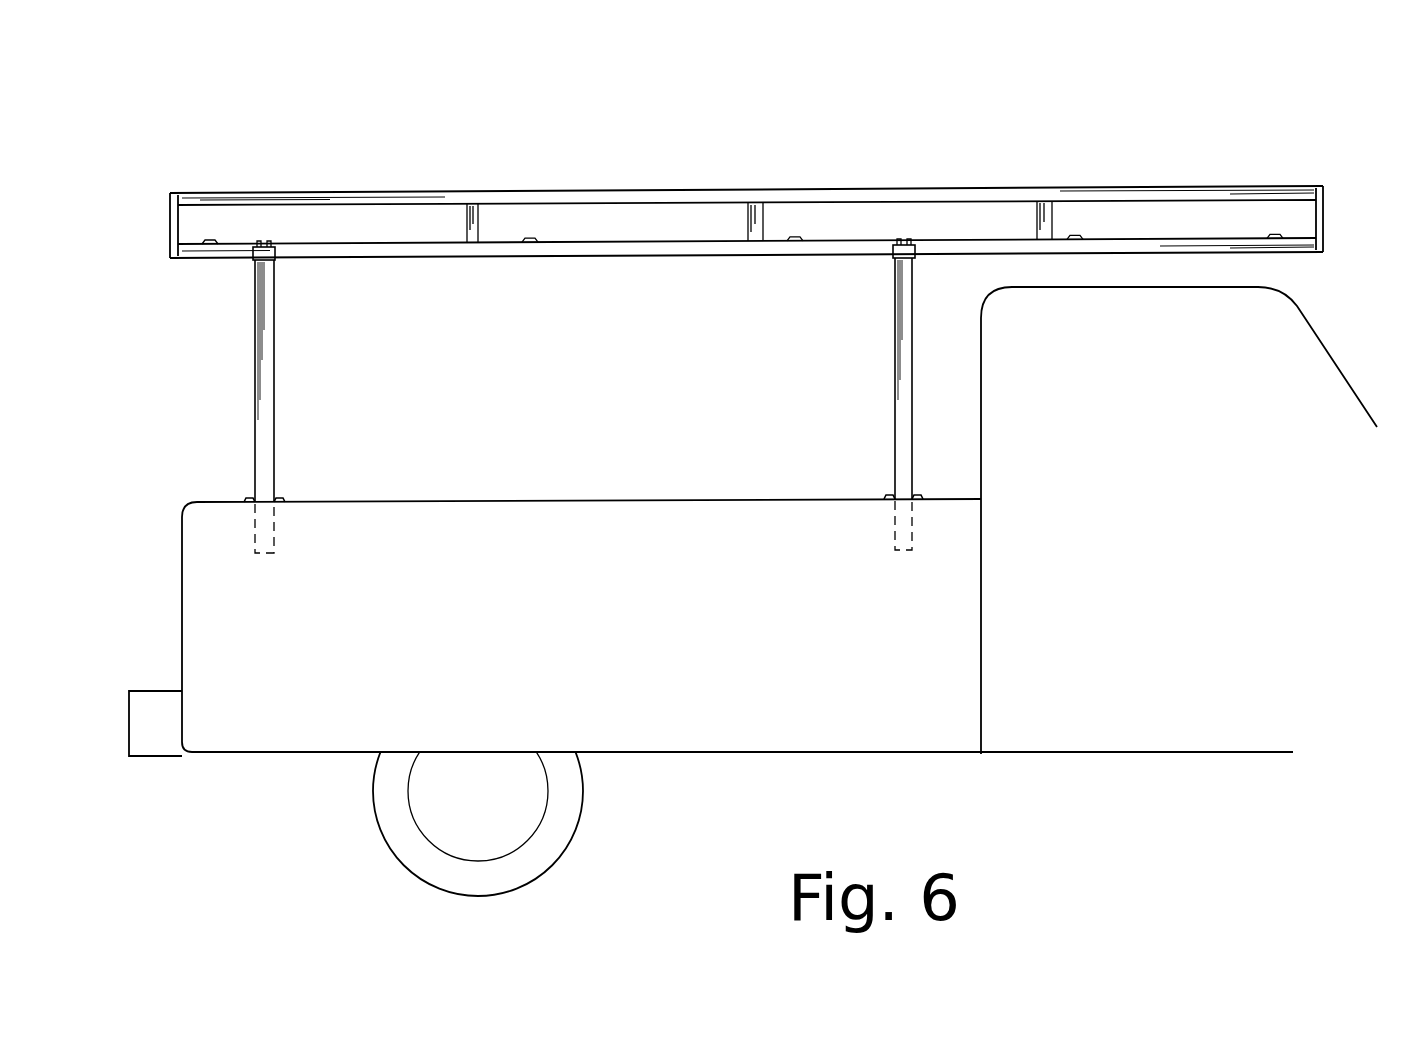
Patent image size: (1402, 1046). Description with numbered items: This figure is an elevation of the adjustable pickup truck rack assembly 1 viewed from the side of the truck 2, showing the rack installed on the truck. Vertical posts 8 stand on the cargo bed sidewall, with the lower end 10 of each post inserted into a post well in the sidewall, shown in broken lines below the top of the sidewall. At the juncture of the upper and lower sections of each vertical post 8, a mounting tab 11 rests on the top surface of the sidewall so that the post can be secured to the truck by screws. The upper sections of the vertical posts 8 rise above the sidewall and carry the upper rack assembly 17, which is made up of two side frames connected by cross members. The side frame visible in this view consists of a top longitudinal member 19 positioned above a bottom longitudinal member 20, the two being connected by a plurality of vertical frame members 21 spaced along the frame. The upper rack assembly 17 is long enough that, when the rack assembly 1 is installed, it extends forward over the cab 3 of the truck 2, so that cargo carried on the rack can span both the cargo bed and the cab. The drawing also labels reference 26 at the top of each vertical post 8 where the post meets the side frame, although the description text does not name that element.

The rack assembly 1 is at (622, 294).
The pickup truck 2 is at (574, 663).
The cab 3 is at (1152, 487).
The vertical post 8 is at (276, 391).
The lower end 10 is at (276, 546).
The mounting tab 11 is at (290, 497).
The upper rack assembly 17 is at (1161, 238).
The top longitudinal member 19 is at (676, 191).
The bottom longitudinal member 20 is at (722, 247).
The vertical frame member 21 is at (764, 222).
The clamp tab 26 is at (260, 240).